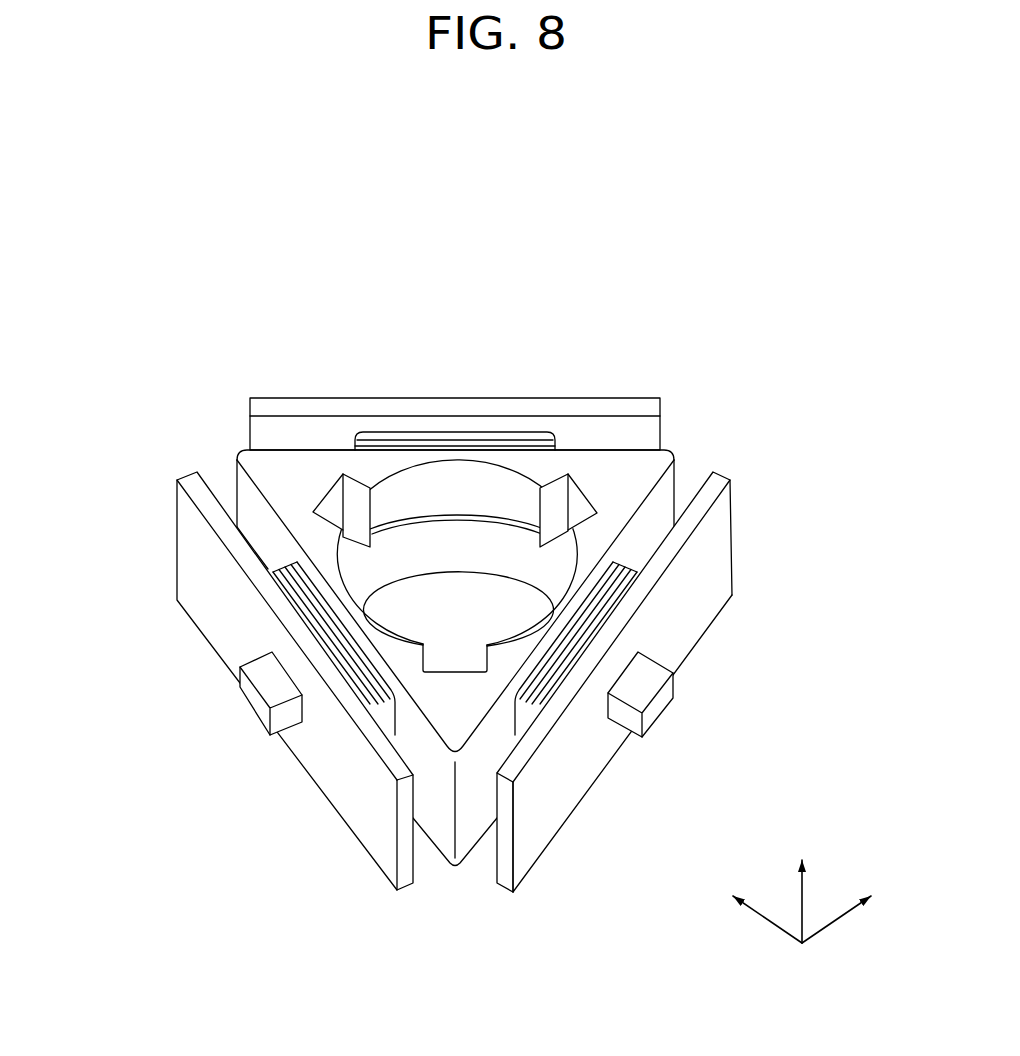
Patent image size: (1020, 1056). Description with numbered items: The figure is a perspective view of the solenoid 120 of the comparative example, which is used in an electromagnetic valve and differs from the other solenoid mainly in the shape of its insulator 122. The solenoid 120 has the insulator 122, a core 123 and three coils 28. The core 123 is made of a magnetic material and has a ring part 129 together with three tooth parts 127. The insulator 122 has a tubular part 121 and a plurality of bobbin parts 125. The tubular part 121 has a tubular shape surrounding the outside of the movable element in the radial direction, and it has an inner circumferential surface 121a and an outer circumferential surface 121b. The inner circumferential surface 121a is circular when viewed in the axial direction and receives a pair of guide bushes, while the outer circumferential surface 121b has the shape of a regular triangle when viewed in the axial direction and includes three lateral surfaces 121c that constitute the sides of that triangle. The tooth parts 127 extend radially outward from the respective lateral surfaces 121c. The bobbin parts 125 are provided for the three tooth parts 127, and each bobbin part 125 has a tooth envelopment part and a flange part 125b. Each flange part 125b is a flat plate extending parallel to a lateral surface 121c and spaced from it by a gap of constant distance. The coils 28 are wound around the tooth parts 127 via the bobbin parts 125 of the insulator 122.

The solenoid 120 is at (697, 228).
The tubular part 121 is at (637, 474).
The inner circumferential surface 121a is at (522, 502).
The outer circumferential surface 121b is at (657, 503).
The lateral surface 121c is at (430, 818).
The insulator 122 is at (565, 387).
The core 123 is at (476, 514).
The bobbin part 125 is at (306, 393).
The flange part 125b is at (712, 570).
The tooth part 127 is at (642, 683).
The coil 28 is at (393, 434).
The ring part 129 is at (448, 543).